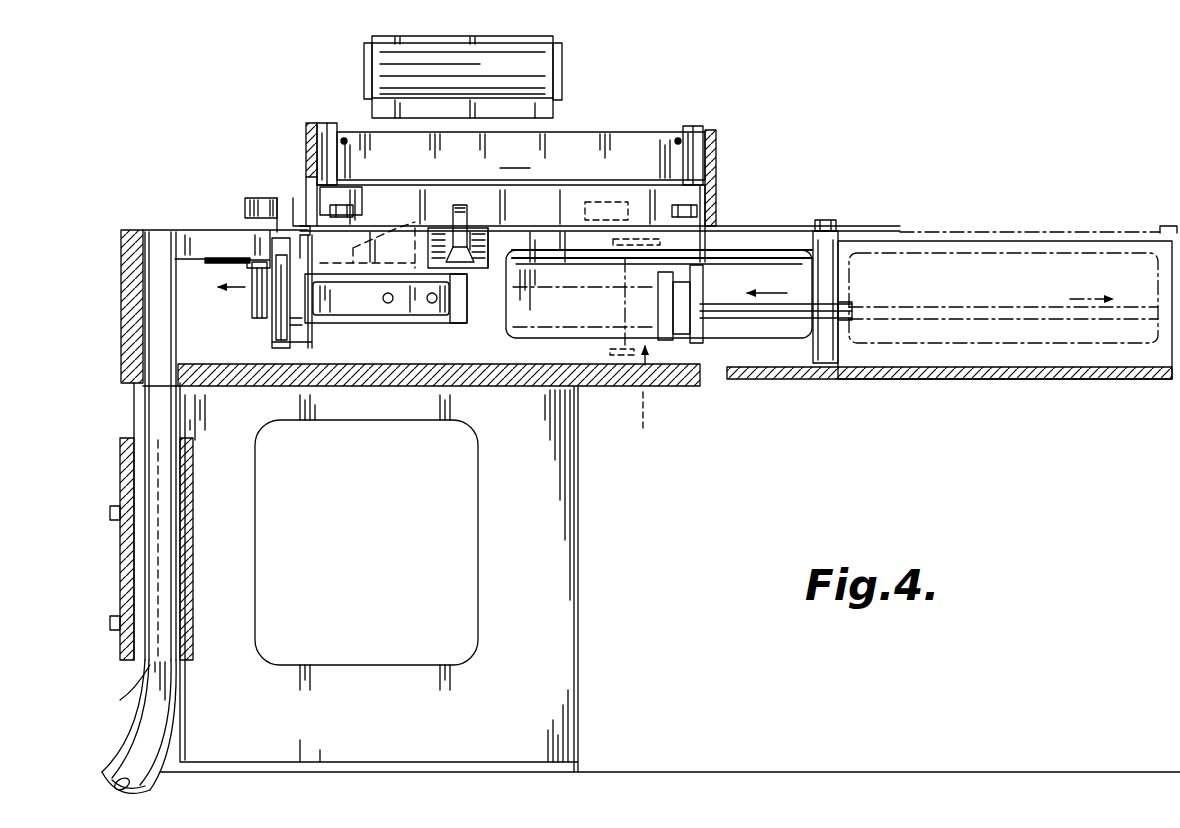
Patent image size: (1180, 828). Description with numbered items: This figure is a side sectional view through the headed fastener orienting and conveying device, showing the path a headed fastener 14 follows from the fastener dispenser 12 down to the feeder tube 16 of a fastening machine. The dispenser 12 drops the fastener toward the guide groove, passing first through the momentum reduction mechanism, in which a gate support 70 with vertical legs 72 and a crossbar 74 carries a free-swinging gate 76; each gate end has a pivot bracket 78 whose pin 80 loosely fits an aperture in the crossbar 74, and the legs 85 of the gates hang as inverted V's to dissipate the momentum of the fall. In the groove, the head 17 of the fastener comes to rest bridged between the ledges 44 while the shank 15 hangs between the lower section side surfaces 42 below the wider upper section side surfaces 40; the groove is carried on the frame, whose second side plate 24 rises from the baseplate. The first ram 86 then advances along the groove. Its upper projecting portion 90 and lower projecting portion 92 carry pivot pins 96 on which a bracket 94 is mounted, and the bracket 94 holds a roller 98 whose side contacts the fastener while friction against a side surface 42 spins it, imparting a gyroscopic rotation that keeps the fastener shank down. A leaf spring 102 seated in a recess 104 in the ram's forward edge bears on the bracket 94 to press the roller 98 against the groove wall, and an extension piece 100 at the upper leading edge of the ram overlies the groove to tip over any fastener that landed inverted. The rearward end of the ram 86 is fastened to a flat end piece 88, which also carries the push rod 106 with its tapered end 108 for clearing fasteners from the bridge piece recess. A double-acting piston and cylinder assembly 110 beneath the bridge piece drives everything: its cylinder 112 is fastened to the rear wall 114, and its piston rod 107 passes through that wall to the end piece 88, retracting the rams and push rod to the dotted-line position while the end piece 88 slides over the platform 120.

The fastener dispenser 12 is at (565, 88).
The headed fastener 14 is at (251, 305).
The shank 15 is at (250, 291).
The feeder tube 16 is at (151, 778).
The head 17 is at (250, 257).
The second side plate 24 is at (392, 724).
The upper section side surfaces 40 is at (225, 244).
The lower section side surfaces 42 is at (157, 512).
The ledges 44 is at (190, 230).
The gate support 70 is at (306, 150).
The vertical legs 72 is at (717, 213).
The crossbar 74 is at (717, 157).
The gate 76 is at (603, 160).
The pivot bracket 78 is at (331, 123).
The pin 80 is at (308, 125).
The gate legs 85 is at (515, 157).
The first ram 86 is at (757, 238).
The end piece 88 is at (840, 282).
The upper projecting portion 90 is at (285, 230).
The lower projecting portion 92 is at (330, 387).
The bracket 94 is at (304, 340).
The pivot pins 96 is at (365, 222).
The roller 98 is at (272, 338).
The extension piece 100 is at (250, 200).
The leaf spring 102 is at (378, 324).
The recess 104 is at (462, 324).
The push rod 106 is at (795, 254).
The piston rod 107 is at (748, 320).
The tapered end 108 is at (453, 226).
The double-acting piston and cylinder assembly 110 is at (647, 389).
The cylinder 112 is at (528, 292).
The rear wall 114 is at (704, 287).
The platform 120 is at (952, 367).